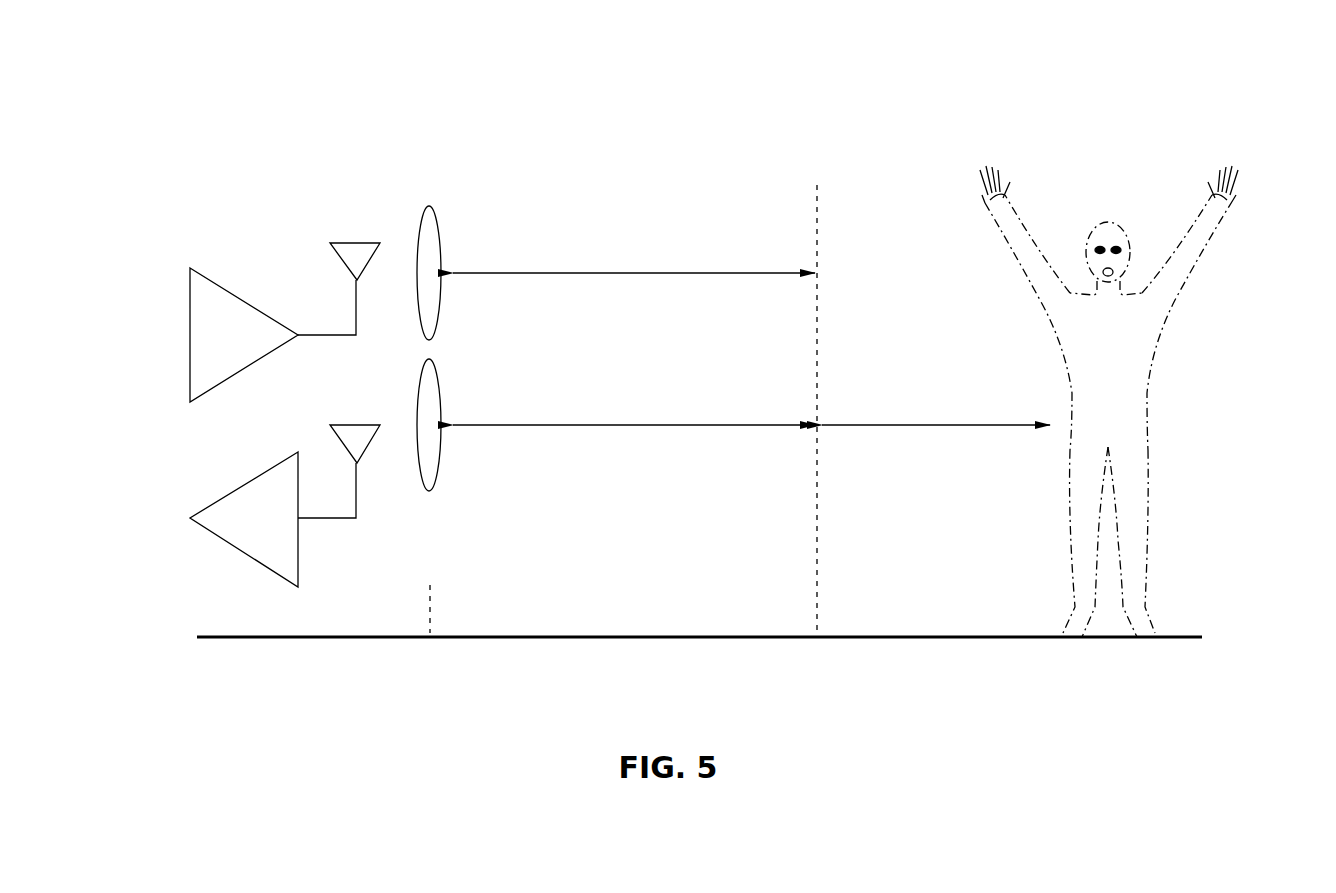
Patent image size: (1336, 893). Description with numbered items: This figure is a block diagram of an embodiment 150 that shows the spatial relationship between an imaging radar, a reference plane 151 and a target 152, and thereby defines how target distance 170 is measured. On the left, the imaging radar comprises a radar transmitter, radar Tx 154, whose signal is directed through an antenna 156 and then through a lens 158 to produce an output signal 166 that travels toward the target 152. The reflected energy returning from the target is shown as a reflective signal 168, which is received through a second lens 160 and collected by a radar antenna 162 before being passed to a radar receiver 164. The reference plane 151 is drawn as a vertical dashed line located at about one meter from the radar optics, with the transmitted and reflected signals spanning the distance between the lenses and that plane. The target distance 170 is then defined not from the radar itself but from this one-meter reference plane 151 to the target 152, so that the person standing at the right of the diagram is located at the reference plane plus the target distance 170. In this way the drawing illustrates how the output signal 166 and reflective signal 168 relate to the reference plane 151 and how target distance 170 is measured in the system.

The embodiment 150 is at (167, 109).
The reference plane 151 is at (819, 578).
The target 152 is at (1182, 362).
The radar Tx 154 is at (190, 353).
The antenna 156 is at (366, 243).
The lens 158 is at (438, 307).
The lens 160 is at (438, 473).
The radar antenna 162 is at (360, 425).
The radar receiver 164 is at (232, 547).
The output signal 166 is at (657, 274).
The reflective signal 168 is at (695, 426).
The target distance 170 is at (943, 426).